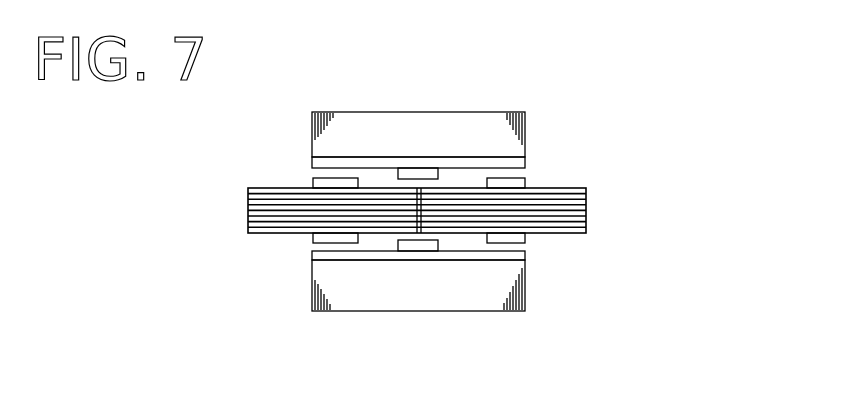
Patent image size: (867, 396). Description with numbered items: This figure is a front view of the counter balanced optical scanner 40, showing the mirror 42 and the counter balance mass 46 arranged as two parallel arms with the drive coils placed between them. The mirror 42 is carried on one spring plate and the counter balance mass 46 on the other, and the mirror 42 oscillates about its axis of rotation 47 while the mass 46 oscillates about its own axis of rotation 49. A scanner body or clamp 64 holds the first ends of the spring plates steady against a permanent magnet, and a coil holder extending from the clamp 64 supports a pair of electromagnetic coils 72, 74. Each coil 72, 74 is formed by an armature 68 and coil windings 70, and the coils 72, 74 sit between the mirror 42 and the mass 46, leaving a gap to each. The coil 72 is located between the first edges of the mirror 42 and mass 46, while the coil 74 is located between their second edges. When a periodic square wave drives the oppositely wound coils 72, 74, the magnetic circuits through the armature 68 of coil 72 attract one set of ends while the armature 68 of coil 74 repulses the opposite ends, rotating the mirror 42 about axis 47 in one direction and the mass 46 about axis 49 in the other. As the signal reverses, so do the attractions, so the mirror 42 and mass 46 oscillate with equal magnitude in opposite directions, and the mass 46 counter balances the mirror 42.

The counter balanced optical scanner 40 is at (583, 75).
The mirror 42 is at (470, 160).
The counter balance mass 46 is at (470, 262).
The axis of rotation 47 is at (420, 176).
The axis of rotation 49 is at (427, 262).
The scanner body or clamp 64 is at (525, 130).
The armature 68 is at (312, 241).
The coil windings 70 is at (586, 210).
The electromagnetic coil 72 is at (275, 178).
The electromagnetic coil 74 is at (605, 178).